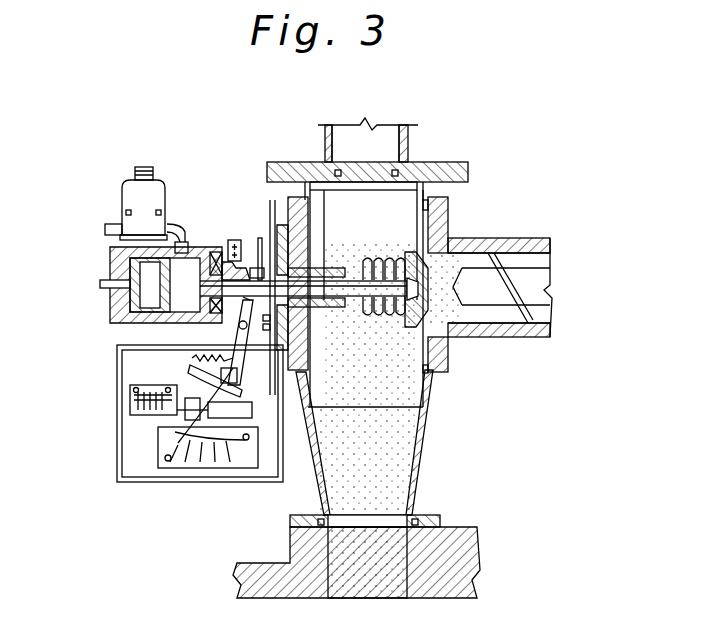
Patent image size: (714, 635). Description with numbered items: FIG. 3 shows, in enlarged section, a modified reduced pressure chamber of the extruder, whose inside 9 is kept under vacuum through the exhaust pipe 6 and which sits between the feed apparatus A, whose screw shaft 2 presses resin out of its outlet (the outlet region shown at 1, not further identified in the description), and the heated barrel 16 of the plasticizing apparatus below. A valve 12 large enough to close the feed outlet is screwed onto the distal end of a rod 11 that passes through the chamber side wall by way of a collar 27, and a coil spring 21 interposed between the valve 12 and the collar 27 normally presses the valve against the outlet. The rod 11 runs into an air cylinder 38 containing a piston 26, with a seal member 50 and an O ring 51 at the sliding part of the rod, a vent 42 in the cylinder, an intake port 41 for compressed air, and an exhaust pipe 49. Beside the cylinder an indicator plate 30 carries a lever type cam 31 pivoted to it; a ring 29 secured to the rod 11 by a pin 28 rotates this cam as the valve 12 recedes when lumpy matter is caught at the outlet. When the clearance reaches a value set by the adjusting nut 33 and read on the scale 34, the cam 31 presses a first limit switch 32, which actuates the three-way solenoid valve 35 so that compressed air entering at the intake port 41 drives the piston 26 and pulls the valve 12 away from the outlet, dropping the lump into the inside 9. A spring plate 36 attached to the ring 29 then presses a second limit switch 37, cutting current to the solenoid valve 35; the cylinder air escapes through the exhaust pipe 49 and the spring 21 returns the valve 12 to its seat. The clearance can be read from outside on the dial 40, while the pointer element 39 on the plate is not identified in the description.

The tube 1 is at (503, 238).
The screw shaft 2 is at (540, 262).
The exhaust pipe 6 is at (408, 156).
The inside of the reduced pressure chamber 9 is at (420, 463).
The rod 11 is at (271, 270).
The valve 12 is at (440, 242).
The barrel 16 is at (238, 593).
The coil spring 21 is at (383, 256).
The piston 26 is at (150, 300).
The collar 27 is at (365, 298).
The pin 28 is at (230, 260).
The ring 29 is at (208, 250).
The indicator plate 30 is at (122, 374).
The lever type cam 31 is at (233, 348).
The first limit switch 32 is at (258, 445).
The adjusting nut 33 is at (207, 412).
The scale 34 is at (130, 402).
The 3-way solenoid valve 35 is at (122, 190).
The spring plate 36 is at (254, 264).
The second limit switch 37 is at (234, 240).
The air cylinder 38 is at (122, 266).
The pointer arm 39 is at (180, 440).
The dial 40 is at (127, 492).
The intake port 41 is at (68, 230).
The vent 42 is at (68, 284).
The exhaust pipe 49 is at (138, 167).
The seal member 50 is at (325, 268).
The O ring 51 is at (312, 234).